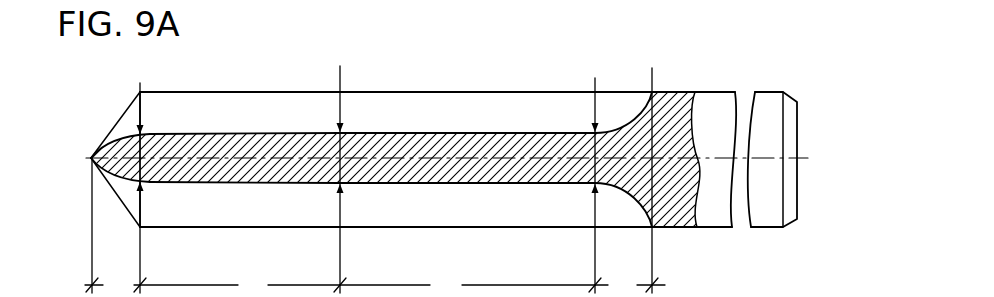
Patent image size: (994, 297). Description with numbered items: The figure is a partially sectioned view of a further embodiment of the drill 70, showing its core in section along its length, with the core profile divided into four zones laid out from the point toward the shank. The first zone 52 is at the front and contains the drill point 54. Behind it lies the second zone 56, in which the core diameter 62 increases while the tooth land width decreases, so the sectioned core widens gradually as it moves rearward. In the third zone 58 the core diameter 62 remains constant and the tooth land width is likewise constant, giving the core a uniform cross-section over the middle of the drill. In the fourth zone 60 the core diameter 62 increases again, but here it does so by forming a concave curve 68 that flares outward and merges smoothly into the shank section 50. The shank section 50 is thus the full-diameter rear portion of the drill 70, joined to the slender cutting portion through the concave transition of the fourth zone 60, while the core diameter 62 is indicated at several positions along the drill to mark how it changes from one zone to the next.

The shank section 50 is at (763, 220).
The first zone 52 is at (132, 296).
The drill point 54 is at (88, 163).
The second zone 56 is at (267, 296).
The third zone 58 is at (460, 296).
The fourth zone 60 is at (636, 296).
The core diameter 62 is at (367, 167).
The concave curve 68 is at (638, 103).
The drill 70 is at (734, 67).